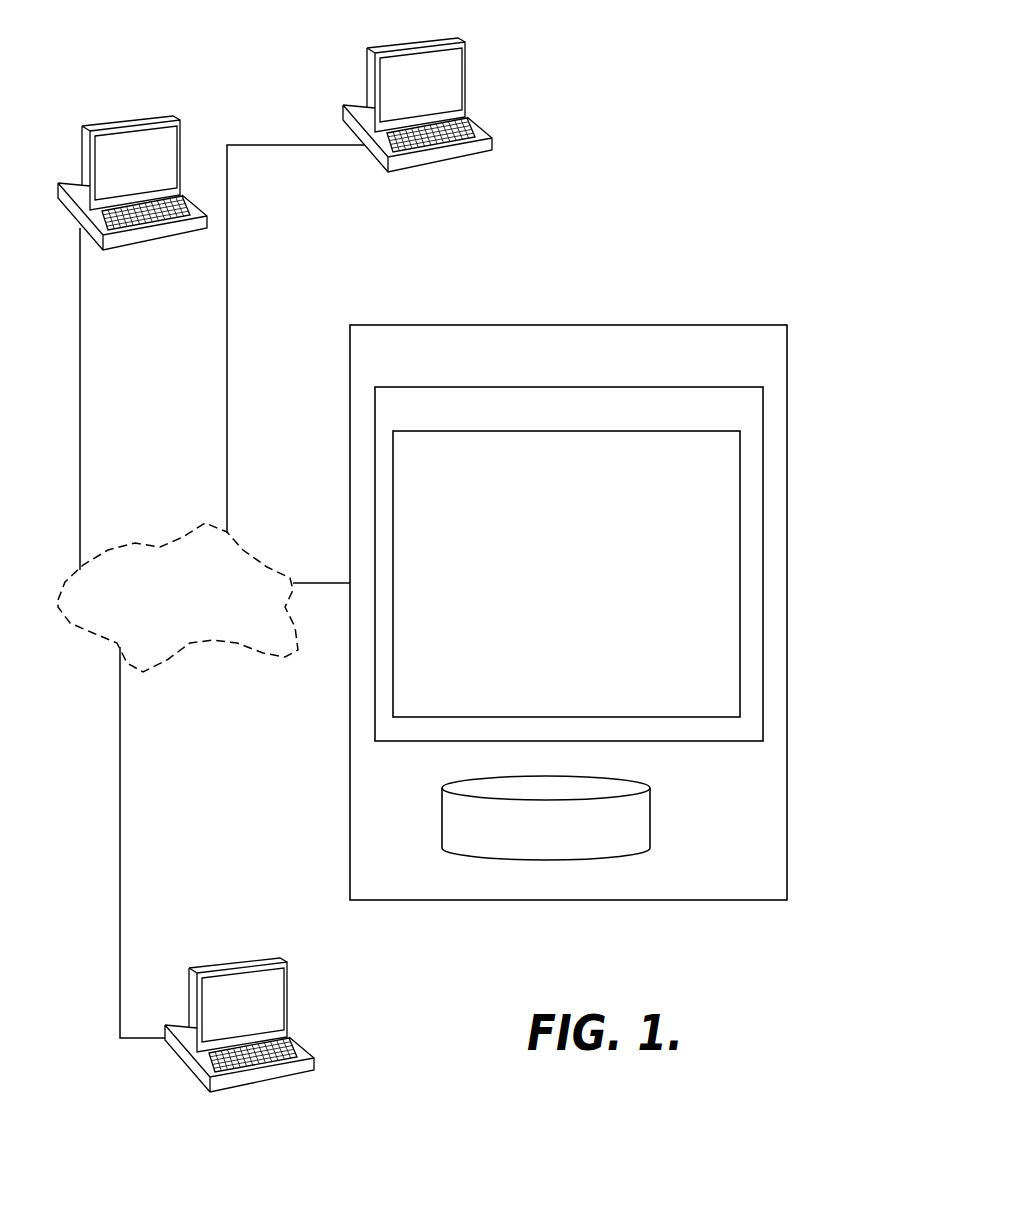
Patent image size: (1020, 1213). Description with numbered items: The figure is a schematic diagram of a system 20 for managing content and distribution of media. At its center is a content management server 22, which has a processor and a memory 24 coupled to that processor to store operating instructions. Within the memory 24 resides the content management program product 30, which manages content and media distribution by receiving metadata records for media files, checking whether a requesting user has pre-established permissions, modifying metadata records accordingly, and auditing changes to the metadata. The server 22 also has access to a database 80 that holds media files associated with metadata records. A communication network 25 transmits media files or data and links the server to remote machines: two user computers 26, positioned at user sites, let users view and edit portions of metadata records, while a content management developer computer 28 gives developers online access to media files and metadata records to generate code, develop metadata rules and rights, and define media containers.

The system 20 is at (775, 150).
The content management server 22 is at (387, 325).
The memory 24 is at (375, 415).
The communication network 25 is at (280, 657).
The user computer 26 is at (468, 53).
The content management developer computer 28 is at (288, 990).
The content management program product 30 is at (392, 453).
The database 80 is at (625, 855).